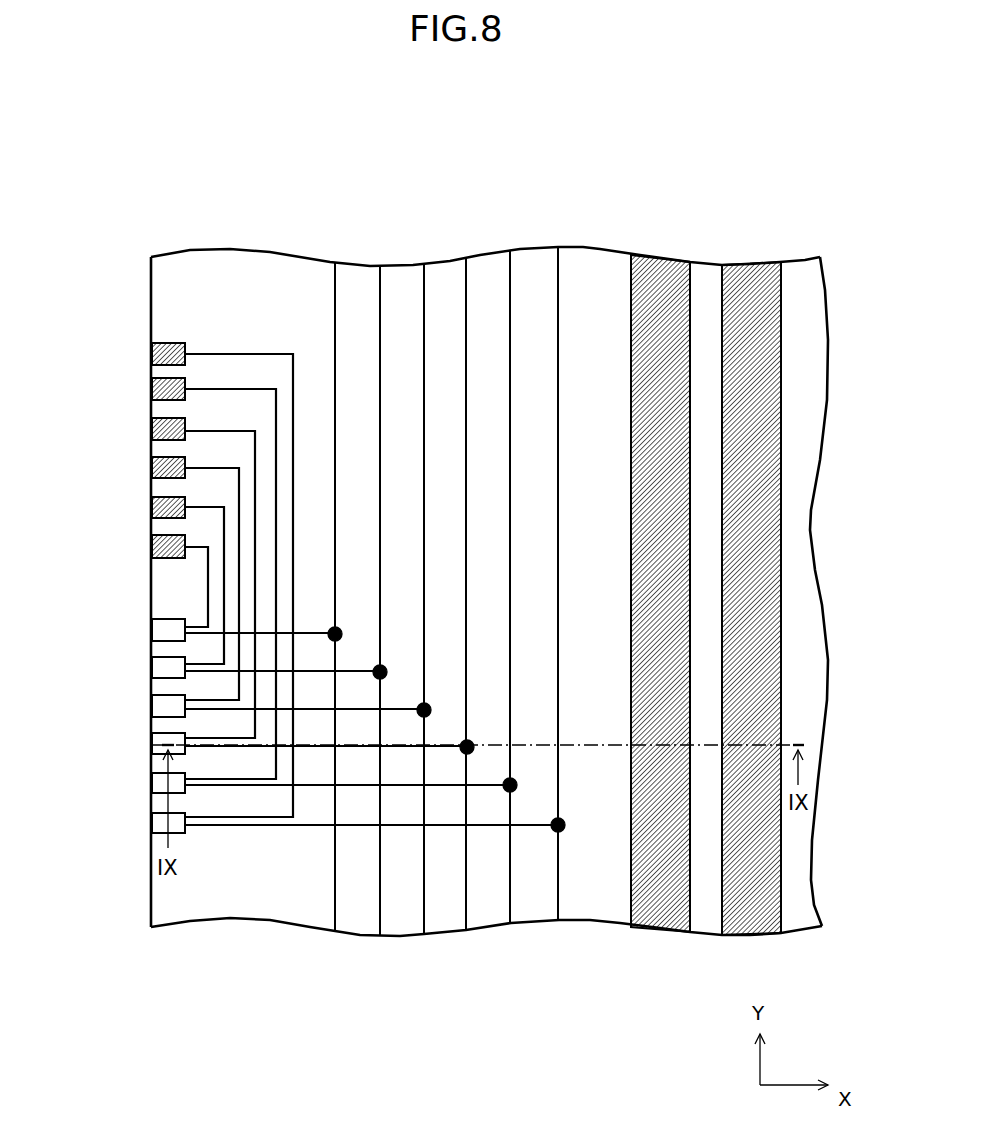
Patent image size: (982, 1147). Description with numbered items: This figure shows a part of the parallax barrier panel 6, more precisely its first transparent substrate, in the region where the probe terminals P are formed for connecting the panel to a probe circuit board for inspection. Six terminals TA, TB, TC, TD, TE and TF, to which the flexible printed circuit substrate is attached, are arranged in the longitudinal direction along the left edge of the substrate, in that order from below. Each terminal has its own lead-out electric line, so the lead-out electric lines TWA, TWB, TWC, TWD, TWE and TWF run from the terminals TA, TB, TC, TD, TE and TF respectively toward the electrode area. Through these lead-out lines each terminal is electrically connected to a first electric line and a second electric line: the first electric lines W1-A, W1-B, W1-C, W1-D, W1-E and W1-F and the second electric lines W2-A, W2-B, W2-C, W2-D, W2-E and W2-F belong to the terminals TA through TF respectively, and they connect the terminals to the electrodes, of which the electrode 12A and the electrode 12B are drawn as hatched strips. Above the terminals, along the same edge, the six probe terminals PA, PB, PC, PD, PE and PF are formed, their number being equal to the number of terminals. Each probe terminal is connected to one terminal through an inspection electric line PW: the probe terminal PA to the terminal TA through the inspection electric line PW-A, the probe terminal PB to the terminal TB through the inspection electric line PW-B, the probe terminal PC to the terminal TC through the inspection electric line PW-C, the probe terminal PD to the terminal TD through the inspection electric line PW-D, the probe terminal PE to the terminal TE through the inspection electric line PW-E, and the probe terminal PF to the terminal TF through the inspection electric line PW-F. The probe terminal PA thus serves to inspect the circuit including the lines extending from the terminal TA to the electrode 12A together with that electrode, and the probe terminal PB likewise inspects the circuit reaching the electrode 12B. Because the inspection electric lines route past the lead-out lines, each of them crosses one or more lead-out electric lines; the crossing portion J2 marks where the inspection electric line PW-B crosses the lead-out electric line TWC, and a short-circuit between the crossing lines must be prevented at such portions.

The parallax barrier panel 6 is at (608, 170).
The electrode 12A is at (660, 593).
The electrode 12B is at (751, 598).
The probe terminal P is at (113, 444).
The probe terminal PA is at (152, 354).
The probe terminal PB is at (152, 389).
The probe terminal PC is at (152, 429).
The probe terminal PD is at (152, 468).
The probe terminal PE is at (152, 508).
The probe terminal PF is at (135, 542).
The inspection electric line PW is at (272, 451).
The inspection electric line PW-A is at (283, 352).
The inspection electric line PW-B is at (267, 384).
The inspection electric line PW-C is at (245, 419).
The inspection electric line PW-D is at (228, 456).
The inspection electric line PW-E is at (212, 497).
The inspection electric line PW-F is at (199, 540).
The first electric line W1-A is at (573, 319).
The first electric line W1-B is at (518, 297).
The first electric line W1-C is at (471, 288).
The first electric line W1-D is at (427, 290).
The first electric line W1-E is at (415, 248).
The first electric line W1-F is at (338, 280).
The second electric line W2-A is at (553, 905).
The second electric line W2-B is at (503, 905).
The second electric line W2-C is at (462, 911).
The second electric line W2-D is at (421, 914).
The second electric line W2-E is at (377, 911).
The second electric line W2-F is at (332, 899).
The terminal TA is at (152, 823).
The terminal TB is at (152, 783).
The terminal TC is at (152, 743).
The terminal TD is at (152, 705).
The terminal TE is at (152, 667).
The terminal TF is at (152, 630).
The lead-out electric line TWA is at (533, 820).
The lead-out electric line TWB is at (479, 782).
The lead-out electric line TWC is at (434, 745).
The lead-out electric line TWD is at (394, 707).
The lead-out electric line TWE is at (349, 668).
The lead-out electric line TWF is at (300, 631).
The crossing portion J2 is at (284, 751).